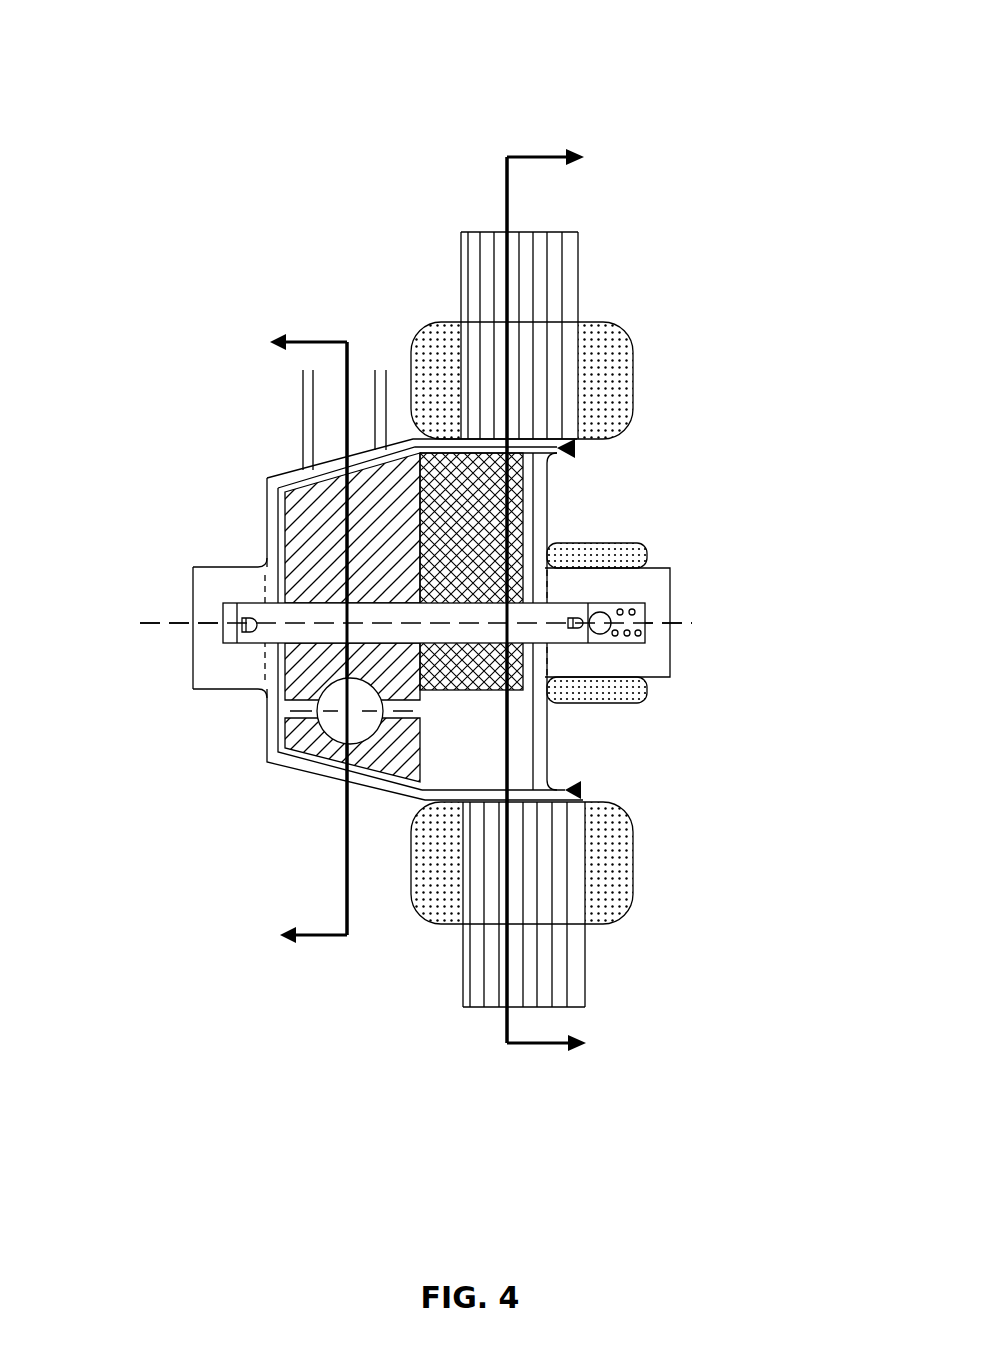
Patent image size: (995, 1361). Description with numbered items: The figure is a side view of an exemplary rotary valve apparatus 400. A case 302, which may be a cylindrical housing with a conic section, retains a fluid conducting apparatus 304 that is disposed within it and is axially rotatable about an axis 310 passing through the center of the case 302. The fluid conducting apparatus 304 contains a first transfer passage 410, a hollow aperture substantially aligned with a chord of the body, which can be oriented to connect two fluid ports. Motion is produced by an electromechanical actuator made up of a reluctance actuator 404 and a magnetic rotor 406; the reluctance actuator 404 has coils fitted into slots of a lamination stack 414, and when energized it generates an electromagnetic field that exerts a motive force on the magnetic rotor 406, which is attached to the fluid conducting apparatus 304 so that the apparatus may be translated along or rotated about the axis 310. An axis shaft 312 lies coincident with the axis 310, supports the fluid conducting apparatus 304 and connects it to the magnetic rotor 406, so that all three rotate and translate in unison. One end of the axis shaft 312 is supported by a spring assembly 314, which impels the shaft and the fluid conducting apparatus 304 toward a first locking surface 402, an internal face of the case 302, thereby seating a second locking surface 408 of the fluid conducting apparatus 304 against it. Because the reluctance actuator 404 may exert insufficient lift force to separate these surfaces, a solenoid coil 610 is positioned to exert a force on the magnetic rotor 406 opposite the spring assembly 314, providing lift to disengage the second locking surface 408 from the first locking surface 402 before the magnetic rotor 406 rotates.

The actuator assembly 400 is at (596, 68).
The case 302 is at (405, 800).
The fluid conducting apparatus 304 is at (318, 520).
The axis 310 is at (692, 623).
The axis shaft 312 is at (252, 637).
The spring assembly 314 is at (645, 643).
The first locking surface 402 is at (327, 480).
The reluctance actuator 404 is at (620, 388).
The magnetic rotor 406 is at (575, 448).
The second locking surface 408 is at (322, 480).
The first transfer passage 410 is at (325, 738).
The lamination stack 414 is at (572, 232).
The solenoid coil 610 is at (588, 545).